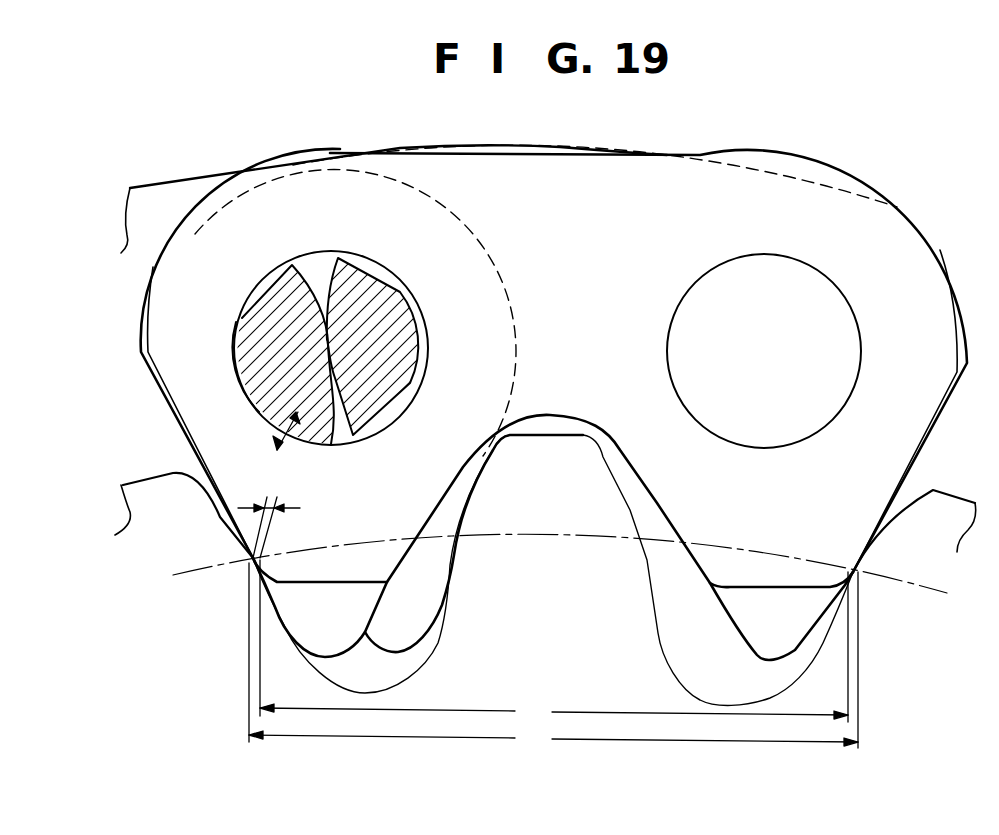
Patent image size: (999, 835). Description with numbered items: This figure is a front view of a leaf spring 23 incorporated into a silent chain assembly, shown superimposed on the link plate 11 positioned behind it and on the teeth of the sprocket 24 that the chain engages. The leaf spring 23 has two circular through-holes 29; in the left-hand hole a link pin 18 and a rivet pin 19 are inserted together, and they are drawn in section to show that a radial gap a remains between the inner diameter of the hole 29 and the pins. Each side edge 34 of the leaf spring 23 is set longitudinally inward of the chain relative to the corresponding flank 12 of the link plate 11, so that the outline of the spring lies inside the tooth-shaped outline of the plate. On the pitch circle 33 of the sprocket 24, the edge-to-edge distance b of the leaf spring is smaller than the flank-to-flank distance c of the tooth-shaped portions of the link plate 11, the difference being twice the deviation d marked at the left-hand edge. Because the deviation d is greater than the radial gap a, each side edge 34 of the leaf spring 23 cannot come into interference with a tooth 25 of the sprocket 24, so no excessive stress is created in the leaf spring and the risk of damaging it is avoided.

The link plate 11 is at (470, 150).
The flank 12 is at (195, 447).
The link pin 18 is at (362, 285).
The rivet pin 19 is at (270, 300).
The leaf spring 23 is at (697, 192).
The sprocket 24 is at (880, 690).
The tooth 25 is at (143, 512).
The circular through-hole 29 is at (425, 325).
The pitch circle 33 is at (887, 578).
The side edge 34 is at (166, 397).
The radial gap a is at (278, 430).
The edge-to-edge distance b is at (554, 642).
The flank-to-flank distance c is at (553, 656).
The edge deviation d is at (270, 500).